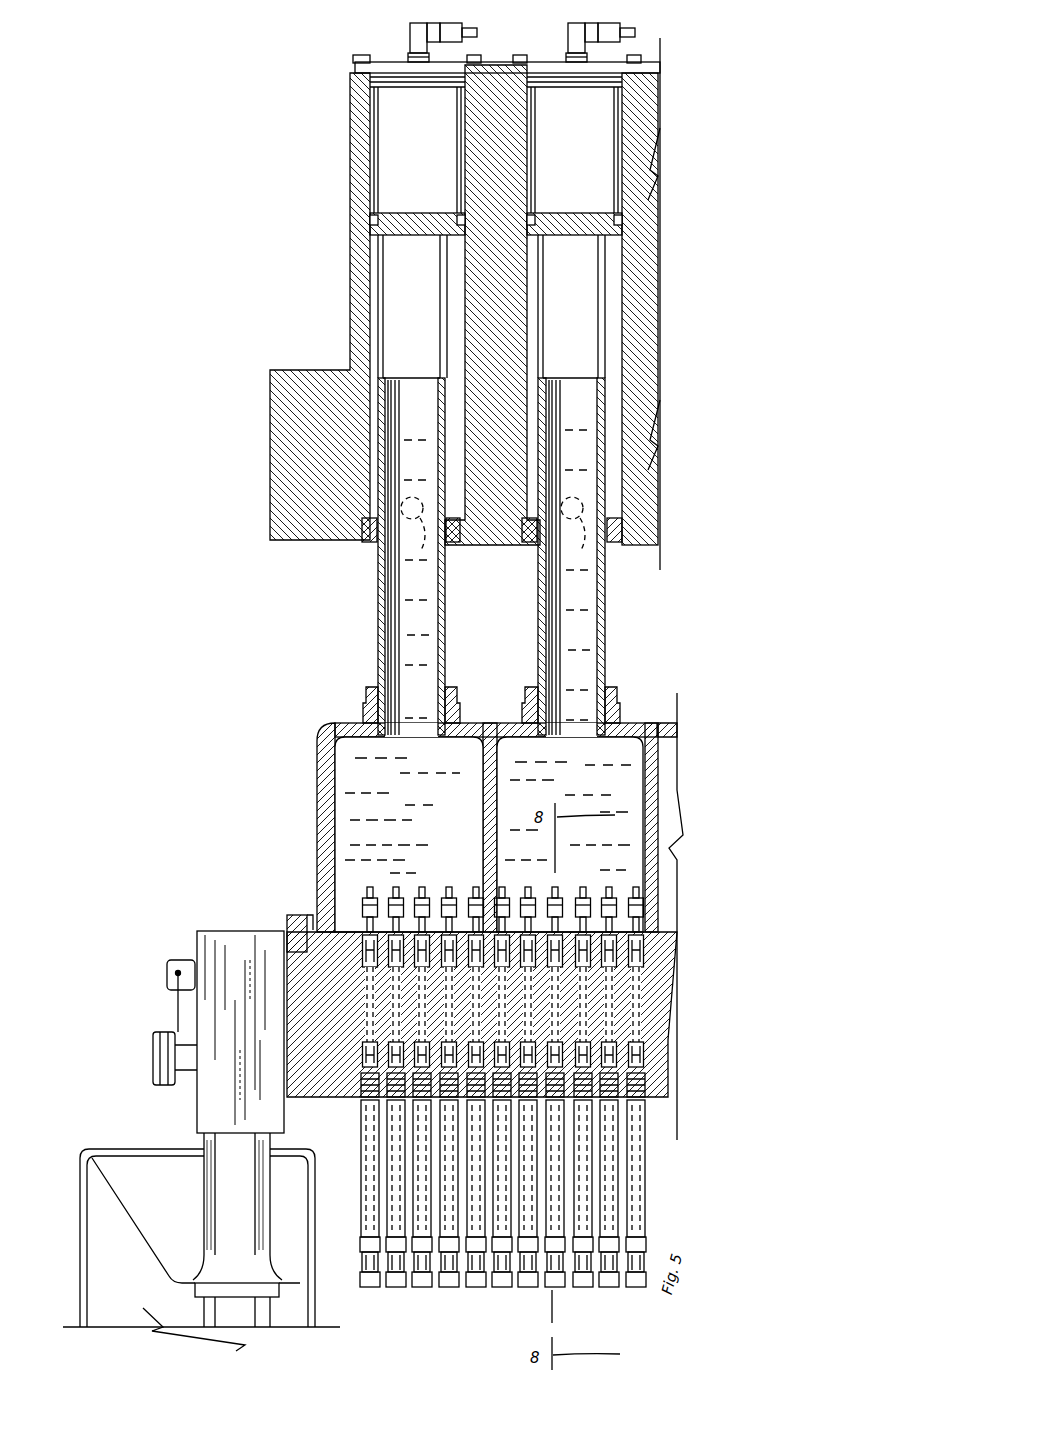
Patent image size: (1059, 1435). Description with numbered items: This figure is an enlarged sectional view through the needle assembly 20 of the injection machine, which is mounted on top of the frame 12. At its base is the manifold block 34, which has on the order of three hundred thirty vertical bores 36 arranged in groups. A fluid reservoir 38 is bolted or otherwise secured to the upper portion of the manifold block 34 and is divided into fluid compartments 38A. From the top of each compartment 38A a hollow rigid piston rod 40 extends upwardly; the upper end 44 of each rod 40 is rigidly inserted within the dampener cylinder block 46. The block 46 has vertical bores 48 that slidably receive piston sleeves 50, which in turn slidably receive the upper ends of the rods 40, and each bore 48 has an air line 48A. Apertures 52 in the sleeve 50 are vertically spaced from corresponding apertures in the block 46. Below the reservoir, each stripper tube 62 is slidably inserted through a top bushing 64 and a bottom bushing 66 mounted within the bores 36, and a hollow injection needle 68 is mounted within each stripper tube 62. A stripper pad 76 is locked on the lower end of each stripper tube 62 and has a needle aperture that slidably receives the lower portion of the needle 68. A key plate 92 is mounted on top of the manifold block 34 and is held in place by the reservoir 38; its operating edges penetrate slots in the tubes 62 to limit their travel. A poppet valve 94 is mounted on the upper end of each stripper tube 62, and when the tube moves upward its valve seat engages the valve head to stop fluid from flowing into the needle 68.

The frame 12 is at (118, 1190).
The needle assembly 20 is at (282, 854).
The manifold block 34 is at (318, 952).
The vertical bores 36 is at (645, 995).
The fluid reservoir 38 is at (295, 835).
The fluid compartments 38A is at (338, 808).
The hollow rigid piston rod 40 is at (415, 550).
The upper end of rod 44 is at (413, 358).
The dampener cylinder block 46 is at (339, 212).
The vertical bores 48 is at (460, 188).
The air line 48A is at (408, 38).
The piston sleeves 50 is at (450, 263).
The apertures 52 is at (368, 542).
The stripper tube 62 is at (641, 1150).
The top bushing 64 is at (680, 975).
The bottom bushing 66 is at (646, 1105).
The hollow injection needle 68 is at (641, 1178).
The stripper pad 76 is at (620, 1226).
The key plate 92 is at (705, 918).
The poppet valve 94 is at (632, 903).